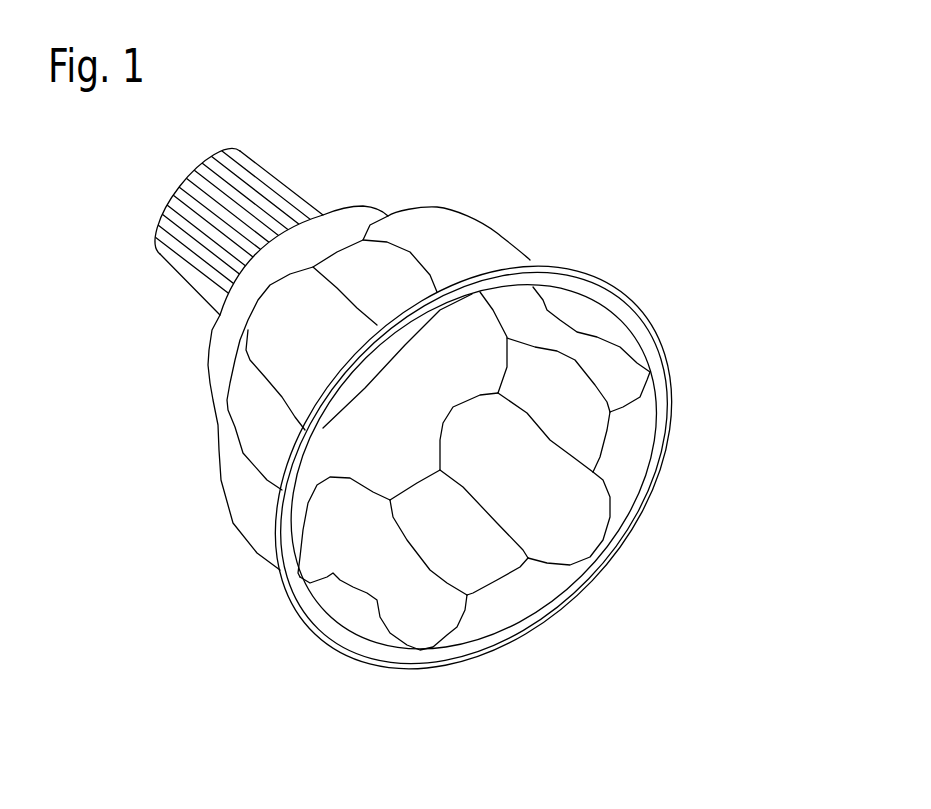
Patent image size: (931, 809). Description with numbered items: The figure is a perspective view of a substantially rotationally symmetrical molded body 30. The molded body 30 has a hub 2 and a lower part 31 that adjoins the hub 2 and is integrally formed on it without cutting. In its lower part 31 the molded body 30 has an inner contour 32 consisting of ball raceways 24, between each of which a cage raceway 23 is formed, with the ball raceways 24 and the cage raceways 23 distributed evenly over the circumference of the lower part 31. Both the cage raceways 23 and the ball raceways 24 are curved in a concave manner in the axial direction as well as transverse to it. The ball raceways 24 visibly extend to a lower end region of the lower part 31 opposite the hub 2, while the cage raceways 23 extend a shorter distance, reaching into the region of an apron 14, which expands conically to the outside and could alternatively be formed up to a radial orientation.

The hub 2 is at (248, 176).
The molded body 30 is at (490, 173).
The lower part 31 is at (235, 526).
The inner contour 32 is at (527, 590).
The apron 14 is at (643, 410).
The cage raceway 23 is at (580, 430).
The ball raceway 24 is at (573, 527).